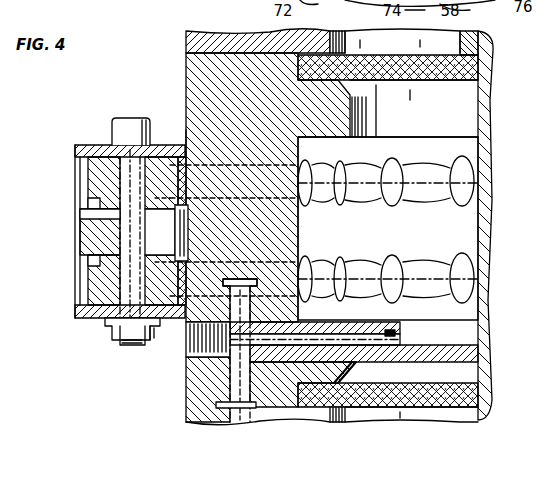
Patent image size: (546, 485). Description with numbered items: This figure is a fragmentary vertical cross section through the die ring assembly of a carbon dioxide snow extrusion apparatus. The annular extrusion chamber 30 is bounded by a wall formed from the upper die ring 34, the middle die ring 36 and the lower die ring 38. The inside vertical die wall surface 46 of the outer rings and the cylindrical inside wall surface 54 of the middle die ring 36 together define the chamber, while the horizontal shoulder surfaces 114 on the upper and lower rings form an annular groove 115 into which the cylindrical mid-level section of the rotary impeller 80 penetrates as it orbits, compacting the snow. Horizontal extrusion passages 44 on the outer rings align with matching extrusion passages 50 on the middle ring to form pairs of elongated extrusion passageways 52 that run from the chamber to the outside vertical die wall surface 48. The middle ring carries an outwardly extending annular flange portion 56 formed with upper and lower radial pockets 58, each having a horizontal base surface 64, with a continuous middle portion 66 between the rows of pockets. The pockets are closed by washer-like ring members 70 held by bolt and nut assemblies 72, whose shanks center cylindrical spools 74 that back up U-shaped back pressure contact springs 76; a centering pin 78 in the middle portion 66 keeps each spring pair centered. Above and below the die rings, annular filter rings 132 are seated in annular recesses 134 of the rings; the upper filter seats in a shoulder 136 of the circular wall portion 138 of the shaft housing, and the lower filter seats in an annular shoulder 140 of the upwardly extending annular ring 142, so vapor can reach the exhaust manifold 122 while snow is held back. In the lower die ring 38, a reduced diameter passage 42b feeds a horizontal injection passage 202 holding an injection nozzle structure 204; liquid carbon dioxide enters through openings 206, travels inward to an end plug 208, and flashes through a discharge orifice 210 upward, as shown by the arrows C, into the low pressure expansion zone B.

The annular extrusion chamber 30 is at (357, 231).
The upper die ring 34 is at (184, 82).
The middle die ring 36 is at (75, 240).
The lower die ring 38 is at (184, 383).
The reduced diameter passage 42b is at (198, 400).
The extrusion passages 44 is at (496, 162).
The inside vertical die wall surface 46 is at (300, 153).
The outside vertical die wall surface 48 is at (183, 135).
The extrusion passages 50 is at (311, 196).
The extrusion passageways 52 is at (345, 177).
The cylindrical inside wall surface 54 is at (302, 222).
The annular flange portion 56 is at (74, 222).
The radial pockets 58 is at (150, 240).
The horizontal base surface 64 is at (95, 203).
The continuous middle portion 66 is at (149, 235).
The annular washer-like ring members 70 is at (88, 145).
The bolt and nut assemblies 72 is at (118, 128).
The cylindrical spools 74 is at (96, 178).
The back pressure contact springs 76 is at (176, 182).
The centering pin 78 is at (189, 223).
The rotary impeller 80 is at (482, 232).
The horizontal shoulder surfaces 114 is at (360, 86).
The annular groove 115 is at (323, 239).
The exhaust manifold 122 is at (330, 44).
The annular filter rings 132 is at (430, 78).
The annular recesses 134 is at (299, 74).
The shoulder 136 is at (478, 59).
The circular wall portion 138 is at (496, 79).
The annular shoulder 140 is at (490, 378).
The upwardly extending annular ring 142 is at (492, 356).
The horizontal injection passages 202 is at (278, 343).
The injection nozzle structure 204 is at (412, 352).
The openings 206 is at (251, 300).
The end plugs 208 is at (402, 338).
The discharge orifice 210 is at (406, 334).
The expansion zone B is at (396, 230).
The arrows C is at (428, 306).